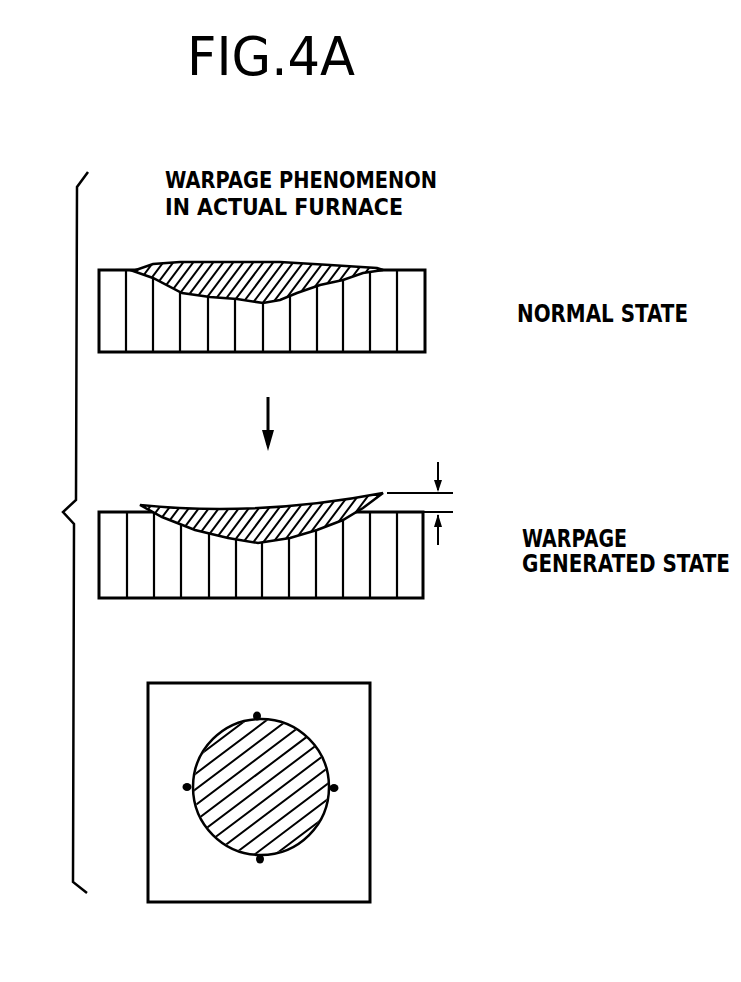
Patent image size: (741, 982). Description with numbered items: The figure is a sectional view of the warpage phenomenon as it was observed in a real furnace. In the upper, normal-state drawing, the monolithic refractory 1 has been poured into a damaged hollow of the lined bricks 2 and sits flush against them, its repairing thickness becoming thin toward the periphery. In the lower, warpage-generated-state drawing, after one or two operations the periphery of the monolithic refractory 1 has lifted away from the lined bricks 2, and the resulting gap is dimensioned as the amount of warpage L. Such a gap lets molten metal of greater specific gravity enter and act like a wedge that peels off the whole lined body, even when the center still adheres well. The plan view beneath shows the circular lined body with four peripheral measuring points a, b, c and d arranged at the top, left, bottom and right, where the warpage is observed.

The monolithic refractory 1 is at (307, 263).
The lined bricks 2 is at (407, 303).
The amount of warpage L is at (433, 503).
The measurement point a is at (256, 704).
The measurement point b is at (178, 788).
The measurement point c is at (258, 876).
The measurement point d is at (345, 788).